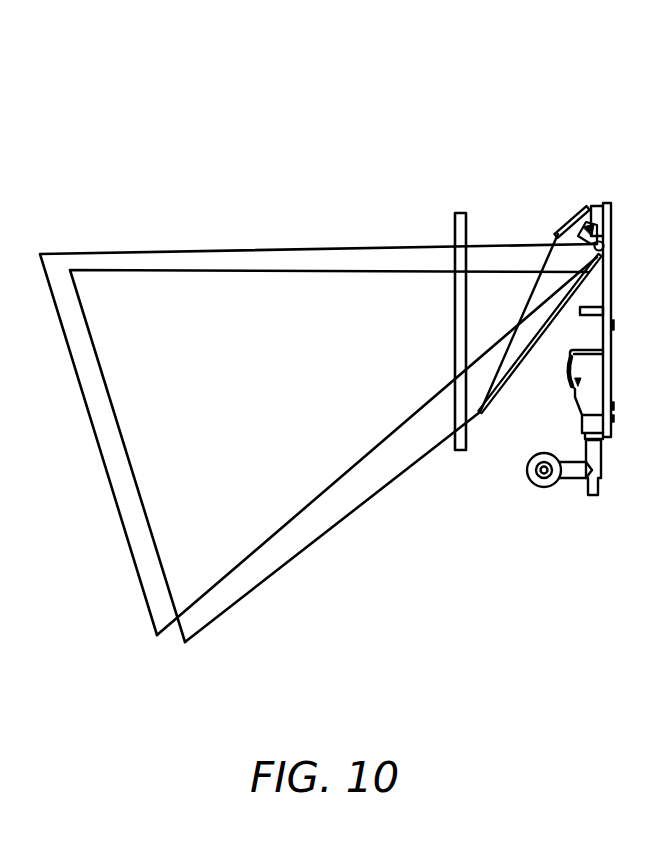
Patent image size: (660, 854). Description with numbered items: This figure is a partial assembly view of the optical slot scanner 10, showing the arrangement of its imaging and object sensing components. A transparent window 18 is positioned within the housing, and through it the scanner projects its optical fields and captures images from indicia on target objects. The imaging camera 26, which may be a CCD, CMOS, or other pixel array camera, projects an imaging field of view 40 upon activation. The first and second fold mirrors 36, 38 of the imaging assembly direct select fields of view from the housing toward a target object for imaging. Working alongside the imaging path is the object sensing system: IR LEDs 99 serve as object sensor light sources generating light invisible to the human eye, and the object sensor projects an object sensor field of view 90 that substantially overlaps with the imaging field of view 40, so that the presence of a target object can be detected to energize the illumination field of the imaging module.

The optical slot scanner 10 is at (600, 116).
The transparent window 18 is at (454, 452).
The imaging camera 26 is at (586, 224).
The first fold mirror 36 is at (583, 211).
The second fold mirror 38 is at (528, 354).
The imaging field of view 40 is at (290, 557).
The object sensor field of view 90 is at (163, 638).
The IR LEDs 99 is at (607, 248).